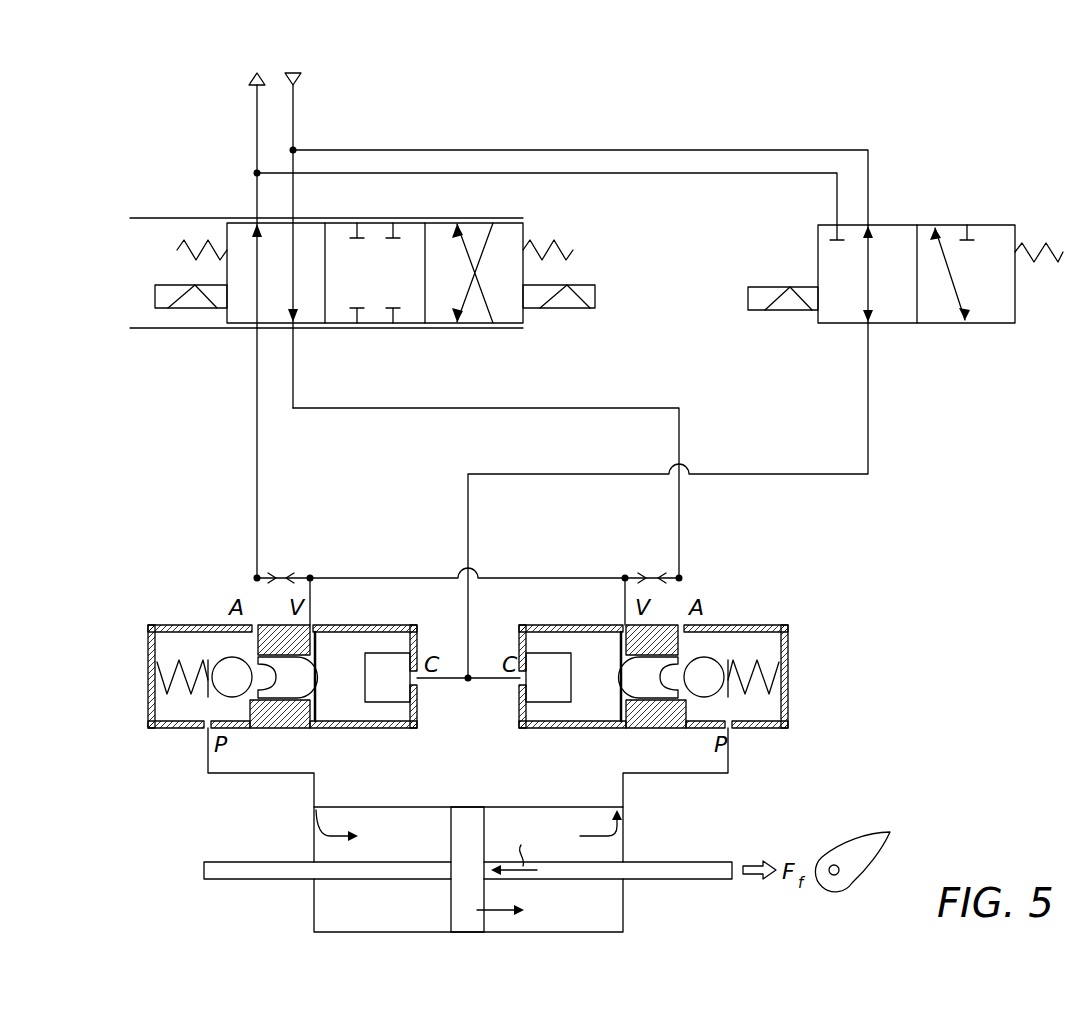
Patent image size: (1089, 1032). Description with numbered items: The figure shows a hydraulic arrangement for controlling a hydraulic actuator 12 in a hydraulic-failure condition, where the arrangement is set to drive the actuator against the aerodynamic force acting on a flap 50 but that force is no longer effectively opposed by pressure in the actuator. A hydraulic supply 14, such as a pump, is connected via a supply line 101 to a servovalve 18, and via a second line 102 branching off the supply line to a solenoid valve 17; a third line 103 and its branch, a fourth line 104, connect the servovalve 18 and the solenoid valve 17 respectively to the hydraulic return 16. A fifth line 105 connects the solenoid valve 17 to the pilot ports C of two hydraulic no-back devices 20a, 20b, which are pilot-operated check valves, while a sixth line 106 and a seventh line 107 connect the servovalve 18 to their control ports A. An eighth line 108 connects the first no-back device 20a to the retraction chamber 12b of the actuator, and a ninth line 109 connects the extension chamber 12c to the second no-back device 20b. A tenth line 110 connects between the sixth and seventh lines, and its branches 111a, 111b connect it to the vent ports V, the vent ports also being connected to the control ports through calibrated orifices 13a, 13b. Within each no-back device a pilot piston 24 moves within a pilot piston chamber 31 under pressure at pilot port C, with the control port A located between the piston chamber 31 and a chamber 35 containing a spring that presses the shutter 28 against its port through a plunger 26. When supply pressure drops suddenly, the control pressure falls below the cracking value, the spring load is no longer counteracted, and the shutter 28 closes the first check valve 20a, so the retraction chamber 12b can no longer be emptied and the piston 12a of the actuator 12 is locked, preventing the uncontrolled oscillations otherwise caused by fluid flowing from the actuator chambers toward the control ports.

The hydraulic actuator 12 is at (625, 917).
The piston 12a is at (470, 820).
The retraction chamber 12b is at (607, 926).
The extension chamber 12c is at (370, 926).
The calibrated orifice 13a is at (655, 575).
The calibrated orifice 13b is at (286, 575).
The hydraulic supply 14 is at (292, 71).
The hydraulic return 16 is at (257, 71).
The solenoid valve 17 is at (1017, 312).
The servovalve 18 is at (226, 276).
The first hydraulic no-back device 20a is at (790, 640).
The second hydraulic no-back device 20b is at (148, 640).
The pilot piston 24 is at (362, 719).
The plunger 26 is at (313, 688).
The shutter 28 is at (245, 688).
The pilot piston chamber 31 is at (399, 688).
The chamber 35 is at (192, 654).
The flap 50 is at (863, 830).
The supply line 101 is at (295, 110).
The second line 102 is at (658, 148).
The third line 103 is at (255, 113).
The fourth line 104 is at (655, 176).
The fifth line 105 is at (870, 408).
The sixth line 106 is at (526, 406).
The seventh line 107 is at (255, 386).
The eighth line 108 is at (700, 777).
The ninth line 109 is at (232, 777).
The tenth line 110 is at (563, 575).
The branch line 111a is at (623, 606).
The branch line 111b is at (313, 604).